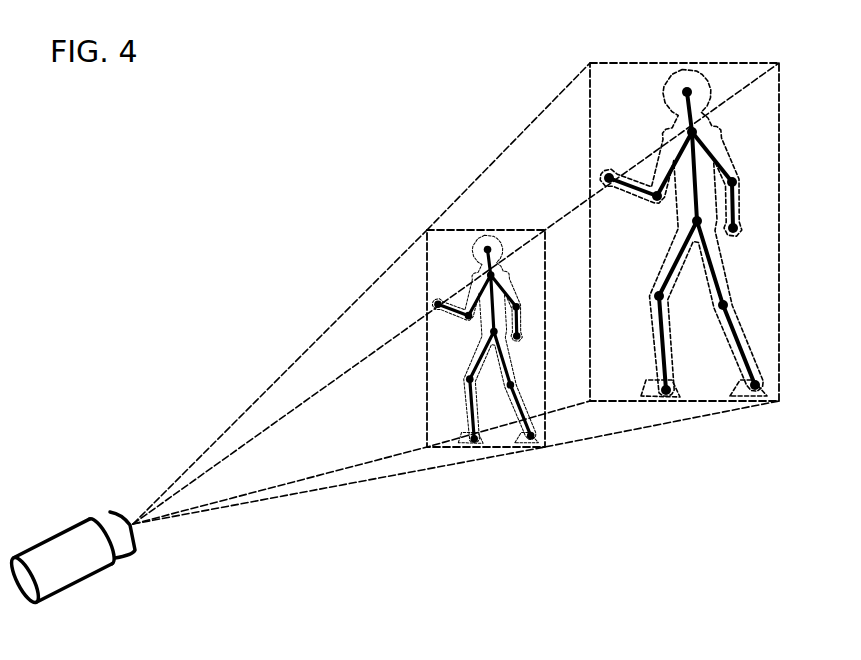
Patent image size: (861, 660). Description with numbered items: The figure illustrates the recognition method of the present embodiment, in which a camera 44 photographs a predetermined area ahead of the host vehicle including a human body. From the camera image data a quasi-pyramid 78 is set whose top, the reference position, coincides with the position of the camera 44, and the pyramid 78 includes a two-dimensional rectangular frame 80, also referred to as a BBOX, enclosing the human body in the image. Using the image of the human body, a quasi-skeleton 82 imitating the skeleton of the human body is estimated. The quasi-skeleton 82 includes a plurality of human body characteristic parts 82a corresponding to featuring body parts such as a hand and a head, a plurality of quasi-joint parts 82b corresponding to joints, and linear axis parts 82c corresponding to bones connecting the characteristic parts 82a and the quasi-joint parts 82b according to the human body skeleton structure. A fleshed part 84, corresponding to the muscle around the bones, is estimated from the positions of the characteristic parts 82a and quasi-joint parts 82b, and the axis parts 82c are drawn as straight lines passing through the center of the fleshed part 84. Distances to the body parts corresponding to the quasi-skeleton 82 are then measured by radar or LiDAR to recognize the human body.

The camera 44 is at (73, 578).
The quasi-pyramid 78 is at (475, 181).
The two-dimensional rectangular frame 80 is at (547, 363).
The quasi-skeleton 82 is at (588, 229).
The human body characteristic part 82a is at (687, 92).
The quasi-joint part 82b is at (693, 132).
The axis part 82c is at (723, 163).
The fleshed part 84 is at (527, 390).